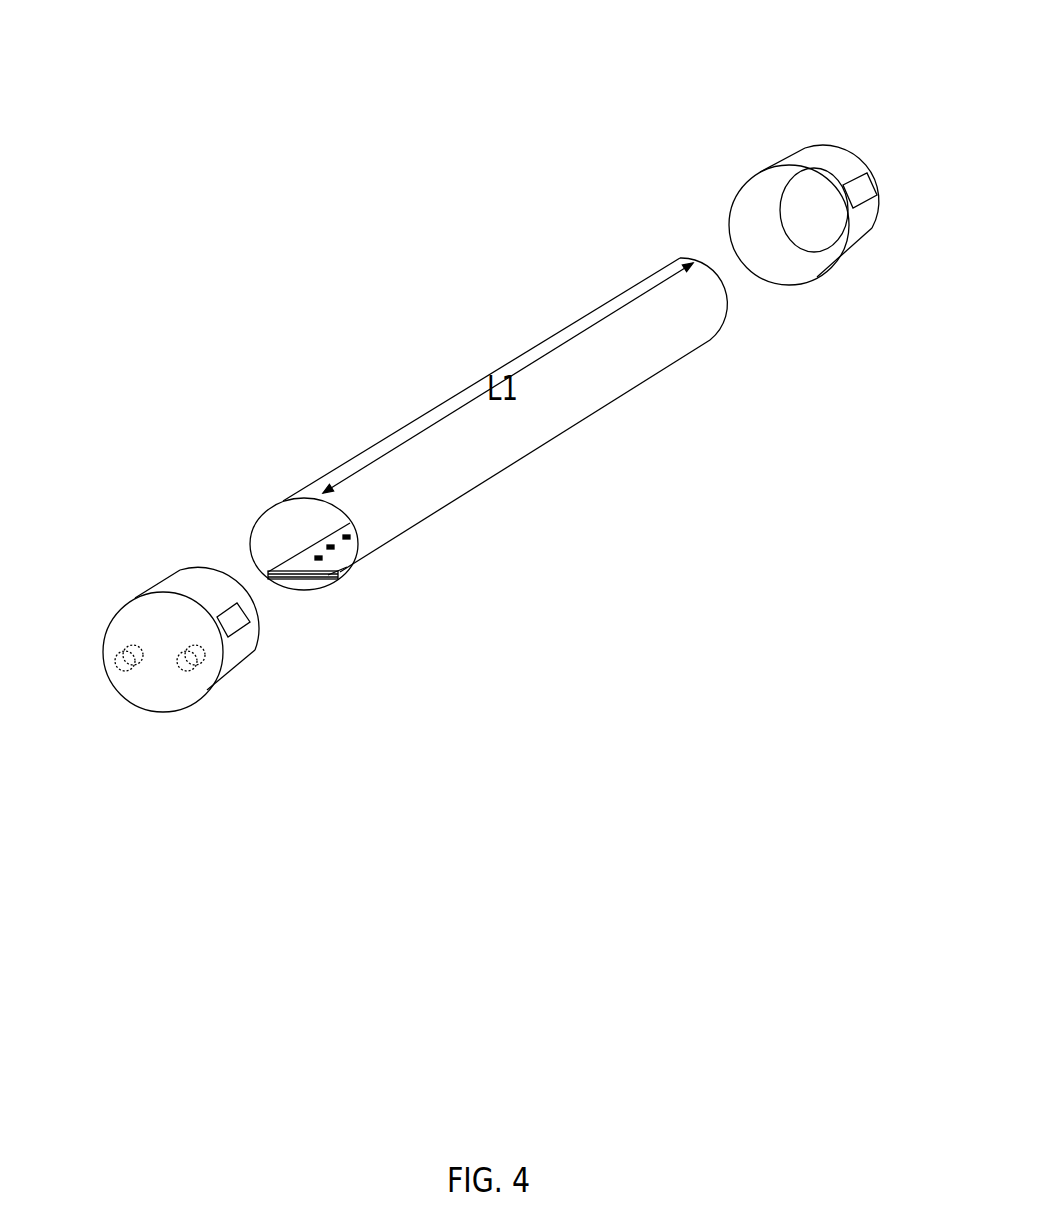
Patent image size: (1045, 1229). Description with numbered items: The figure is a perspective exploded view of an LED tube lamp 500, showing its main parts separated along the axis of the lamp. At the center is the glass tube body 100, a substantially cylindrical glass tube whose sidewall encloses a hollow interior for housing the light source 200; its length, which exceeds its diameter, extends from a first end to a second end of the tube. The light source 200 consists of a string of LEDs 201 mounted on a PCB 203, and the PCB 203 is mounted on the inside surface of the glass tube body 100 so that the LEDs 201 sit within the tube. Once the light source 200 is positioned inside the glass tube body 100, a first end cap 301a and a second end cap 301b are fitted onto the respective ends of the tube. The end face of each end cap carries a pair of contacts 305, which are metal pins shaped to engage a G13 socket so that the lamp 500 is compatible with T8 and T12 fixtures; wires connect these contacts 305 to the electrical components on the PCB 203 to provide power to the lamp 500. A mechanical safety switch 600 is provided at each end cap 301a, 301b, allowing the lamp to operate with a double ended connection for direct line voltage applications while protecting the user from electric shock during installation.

The glass tube body 100 is at (618, 381).
The light source 200 is at (303, 582).
The LEDs 201 is at (330, 547).
The PCB 203 is at (318, 558).
The first end cap 301a is at (207, 637).
The second end cap 301b is at (863, 213).
The contacts 305 is at (123, 655).
The LED tube lamp 500 is at (382, 276).
The mechanical safety switch 600 is at (863, 195).